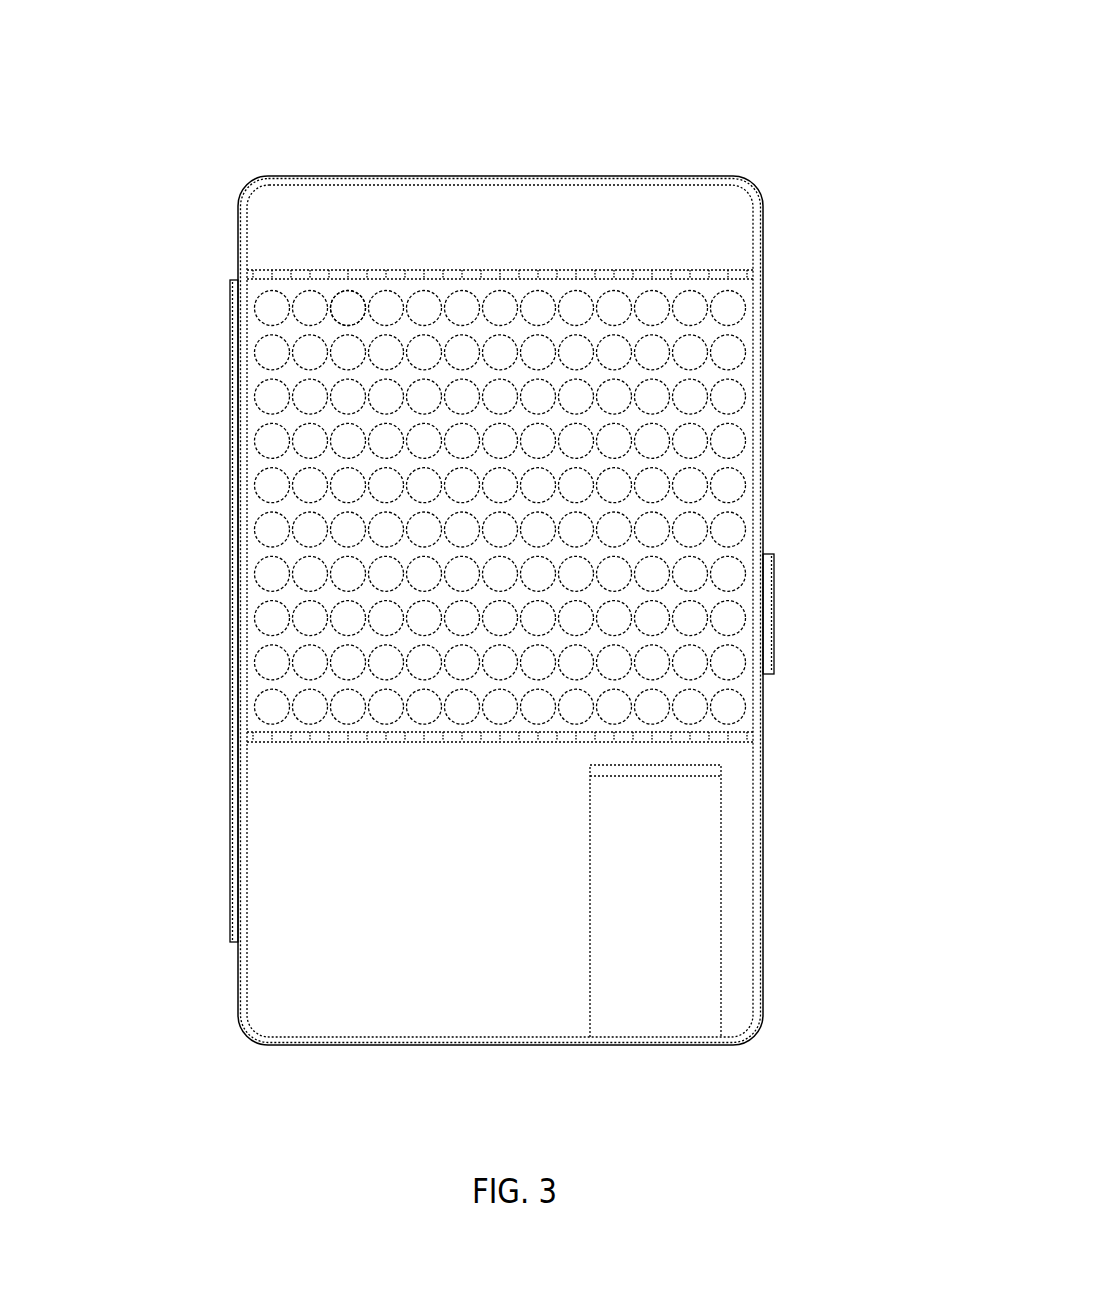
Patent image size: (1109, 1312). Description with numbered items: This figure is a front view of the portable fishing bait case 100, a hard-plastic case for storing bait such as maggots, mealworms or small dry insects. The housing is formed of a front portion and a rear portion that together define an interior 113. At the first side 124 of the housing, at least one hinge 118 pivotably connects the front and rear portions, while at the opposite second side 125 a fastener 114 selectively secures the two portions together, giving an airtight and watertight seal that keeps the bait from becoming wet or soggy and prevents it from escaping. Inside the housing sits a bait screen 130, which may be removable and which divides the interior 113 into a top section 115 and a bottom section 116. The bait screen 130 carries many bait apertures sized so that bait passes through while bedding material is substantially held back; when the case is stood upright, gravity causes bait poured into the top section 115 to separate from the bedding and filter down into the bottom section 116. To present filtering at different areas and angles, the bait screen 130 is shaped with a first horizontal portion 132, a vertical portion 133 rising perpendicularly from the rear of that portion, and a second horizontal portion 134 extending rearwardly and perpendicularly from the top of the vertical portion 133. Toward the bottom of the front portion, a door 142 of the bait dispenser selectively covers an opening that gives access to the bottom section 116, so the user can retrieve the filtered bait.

The portable fishing bait case 100 is at (750, 78).
The interior 113 is at (513, 998).
The fastener 114 is at (774, 619).
The top section 115 is at (442, 232).
The bottom section 116 is at (423, 990).
The hinge 118 is at (228, 573).
The first side 124 is at (236, 243).
The second side 125 is at (762, 277).
The bait screen 130 is at (355, 320).
The first horizontal portion 132 is at (732, 742).
The vertical portion 133 is at (704, 419).
The second horizontal portion 134 is at (605, 268).
The door 142 is at (667, 978).